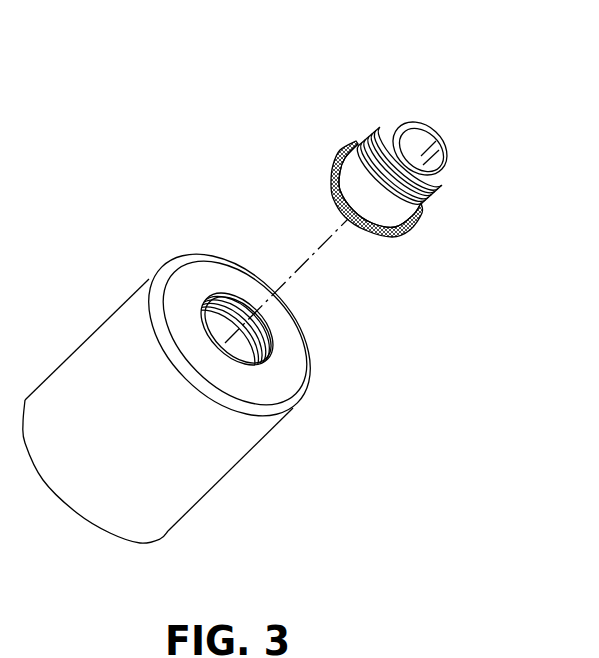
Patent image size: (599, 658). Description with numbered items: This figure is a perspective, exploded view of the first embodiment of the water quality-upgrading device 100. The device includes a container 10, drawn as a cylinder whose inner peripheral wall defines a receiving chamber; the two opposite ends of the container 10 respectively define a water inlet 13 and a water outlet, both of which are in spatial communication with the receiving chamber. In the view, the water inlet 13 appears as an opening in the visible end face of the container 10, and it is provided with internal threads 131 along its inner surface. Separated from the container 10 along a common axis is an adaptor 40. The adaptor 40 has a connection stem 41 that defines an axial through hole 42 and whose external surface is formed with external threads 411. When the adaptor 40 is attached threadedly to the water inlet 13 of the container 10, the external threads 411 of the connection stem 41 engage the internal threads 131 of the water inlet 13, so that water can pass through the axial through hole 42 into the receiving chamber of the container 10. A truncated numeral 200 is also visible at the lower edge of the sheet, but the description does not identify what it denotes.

The water quality-upgrading device 100 is at (132, 76).
The container 10 is at (192, 230).
The water inlet 13 is at (205, 310).
The internal threads 131 is at (248, 311).
The adaptor 40 is at (362, 126).
The connection stem 41 is at (405, 125).
The axial through hole 42 is at (430, 134).
The external threads 411 is at (420, 187).
The reference numeral 200 is at (16, 646).